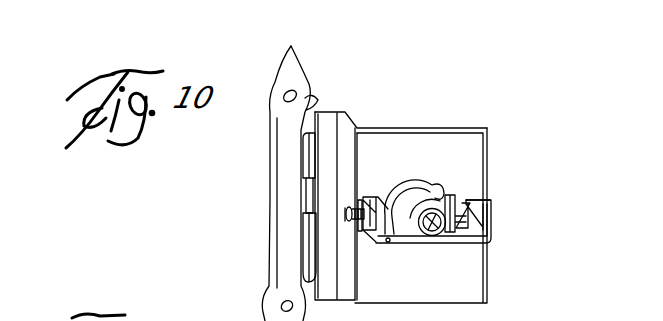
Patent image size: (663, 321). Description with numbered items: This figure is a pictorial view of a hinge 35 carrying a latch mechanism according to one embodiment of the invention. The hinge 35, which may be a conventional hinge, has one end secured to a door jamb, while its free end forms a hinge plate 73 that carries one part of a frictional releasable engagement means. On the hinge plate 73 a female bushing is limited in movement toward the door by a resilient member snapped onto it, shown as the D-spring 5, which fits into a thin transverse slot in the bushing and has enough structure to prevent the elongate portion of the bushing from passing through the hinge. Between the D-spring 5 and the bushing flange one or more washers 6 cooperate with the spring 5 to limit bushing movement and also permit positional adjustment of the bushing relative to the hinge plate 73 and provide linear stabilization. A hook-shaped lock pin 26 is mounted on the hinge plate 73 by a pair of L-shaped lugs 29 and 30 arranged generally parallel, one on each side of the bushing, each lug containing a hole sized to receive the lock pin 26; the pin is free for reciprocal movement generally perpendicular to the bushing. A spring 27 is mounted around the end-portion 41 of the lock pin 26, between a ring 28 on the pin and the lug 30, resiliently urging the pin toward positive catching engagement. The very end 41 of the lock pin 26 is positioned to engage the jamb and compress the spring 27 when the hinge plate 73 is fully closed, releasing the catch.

The D-spring 5 is at (447, 185).
The washer 6 is at (428, 184).
The hook-shaped lock pin 26 is at (462, 245).
The spring 27 is at (363, 244).
The ring 28 is at (355, 213).
The L-shaped lug 29 is at (480, 210).
The L-shaped lug 30 is at (380, 199).
The hinge 35 is at (341, 102).
The end-portion of lock pin 41 is at (352, 222).
The hinge plate 73 is at (428, 132).